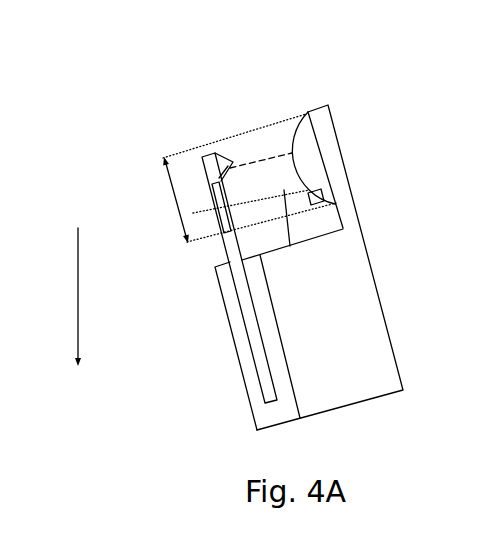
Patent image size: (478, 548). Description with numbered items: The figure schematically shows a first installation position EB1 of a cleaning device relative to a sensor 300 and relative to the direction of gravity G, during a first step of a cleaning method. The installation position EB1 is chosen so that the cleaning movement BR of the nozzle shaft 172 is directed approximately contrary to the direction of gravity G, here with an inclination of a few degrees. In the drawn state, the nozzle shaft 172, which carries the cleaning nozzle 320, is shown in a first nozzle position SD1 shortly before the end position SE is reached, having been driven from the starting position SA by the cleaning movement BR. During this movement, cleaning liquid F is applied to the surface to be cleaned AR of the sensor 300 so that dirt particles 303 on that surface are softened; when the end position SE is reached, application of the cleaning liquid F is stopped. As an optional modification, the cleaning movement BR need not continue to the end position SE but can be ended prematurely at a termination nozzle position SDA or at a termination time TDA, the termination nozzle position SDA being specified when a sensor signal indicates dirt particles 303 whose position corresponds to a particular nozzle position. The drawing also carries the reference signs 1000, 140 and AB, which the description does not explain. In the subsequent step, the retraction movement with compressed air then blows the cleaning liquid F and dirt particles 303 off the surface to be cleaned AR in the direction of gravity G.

The electronic device 1000 is at (362, 214).
The protective member 140 is at (222, 314).
The nozzle shaft 172 is at (221, 253).
The sensor 300 is at (307, 117).
The dirt particles 303 is at (318, 206).
The cleaning nozzle 320 is at (219, 160).
The end position SE is at (165, 157).
The bending length AB is at (180, 193).
The cleaning movement BR is at (193, 213).
The starting position SA is at (261, 222).
The cleaning liquid F is at (273, 157).
The first nozzle position SD1 is at (191, 158).
The surface to be cleaned AR is at (290, 178).
The direction of gravity G is at (77, 272).
The termination nozzle position SDA is at (283, 247).
The termination time TDA is at (323, 354).
The first installation position EB1 is at (400, 85).